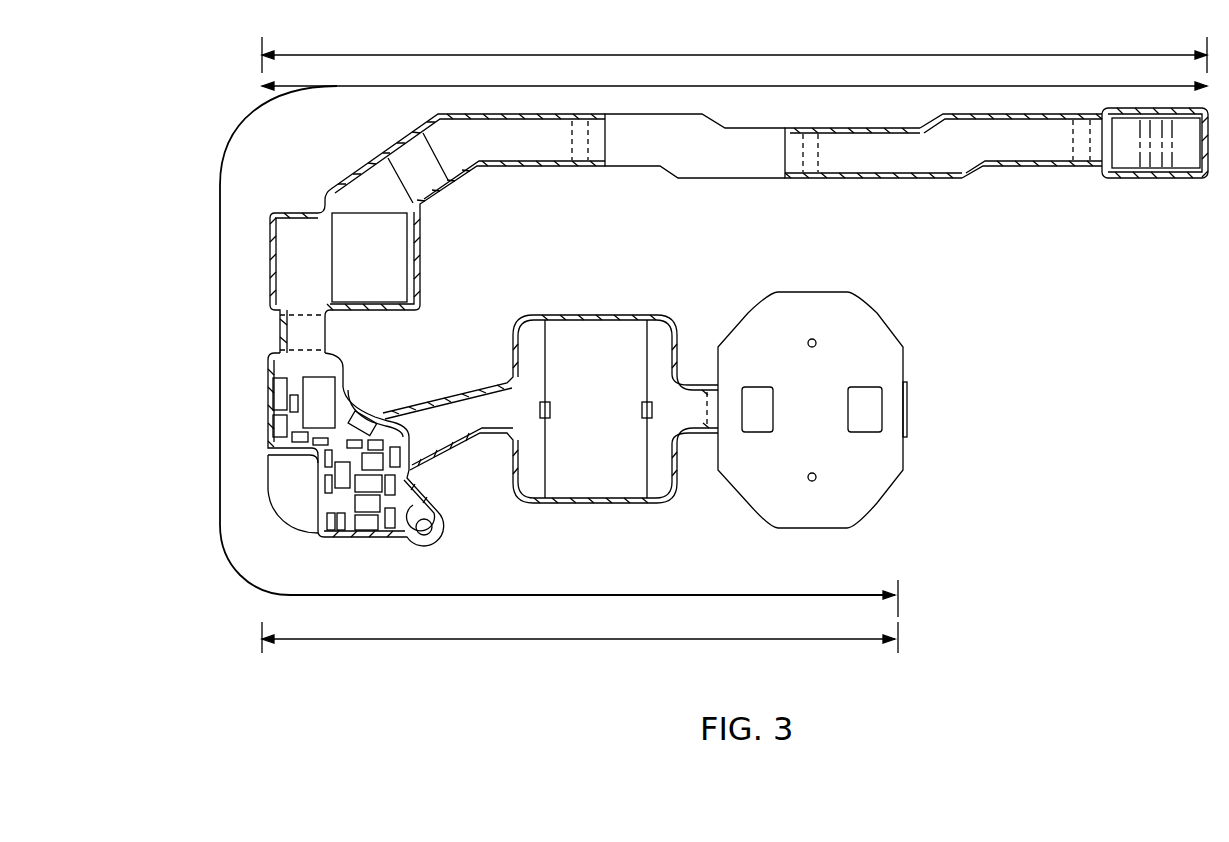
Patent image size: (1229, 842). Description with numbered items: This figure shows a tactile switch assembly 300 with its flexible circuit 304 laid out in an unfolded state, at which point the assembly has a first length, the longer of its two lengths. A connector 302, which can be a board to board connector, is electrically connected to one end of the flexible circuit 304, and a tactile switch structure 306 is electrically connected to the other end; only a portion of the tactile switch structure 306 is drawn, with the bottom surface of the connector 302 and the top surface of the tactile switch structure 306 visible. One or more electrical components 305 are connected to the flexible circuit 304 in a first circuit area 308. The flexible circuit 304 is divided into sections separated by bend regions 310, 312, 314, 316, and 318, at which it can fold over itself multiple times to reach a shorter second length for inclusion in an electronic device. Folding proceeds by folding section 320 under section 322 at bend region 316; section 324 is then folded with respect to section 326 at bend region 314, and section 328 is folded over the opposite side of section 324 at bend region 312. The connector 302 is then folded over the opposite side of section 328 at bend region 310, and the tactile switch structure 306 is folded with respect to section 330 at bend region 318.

The tactile switch assembly 300 is at (992, 386).
The connector 302 is at (1195, 180).
The flexible circuit 304 is at (1005, 167).
The electrical components 305 is at (360, 504).
The tactile switch structure 306 is at (893, 336).
The first circuit area 308 is at (362, 388).
The bend region 310 is at (1073, 152).
The bend region 312 is at (814, 175).
The bend region 314 is at (578, 164).
The bend region 316 is at (282, 333).
The bend region 318 is at (710, 430).
The section 320 is at (683, 54).
The section 322 is at (527, 641).
The section 324 is at (705, 178).
The section 326 is at (507, 166).
The section 328 is at (880, 178).
The section 330 is at (612, 490).